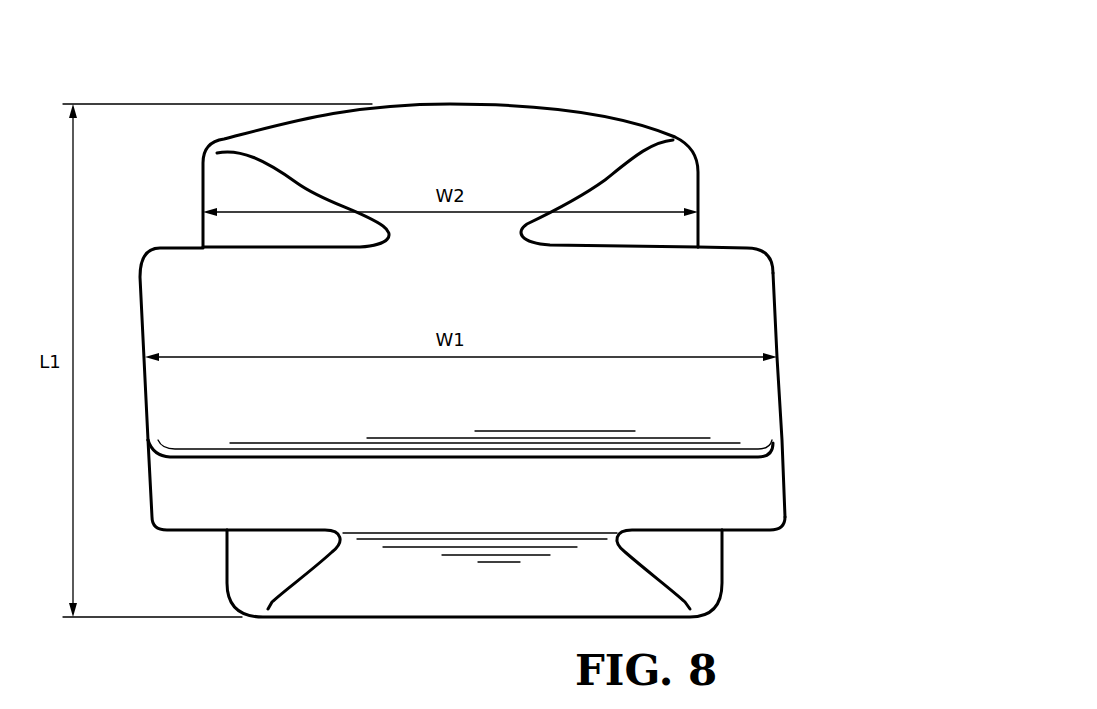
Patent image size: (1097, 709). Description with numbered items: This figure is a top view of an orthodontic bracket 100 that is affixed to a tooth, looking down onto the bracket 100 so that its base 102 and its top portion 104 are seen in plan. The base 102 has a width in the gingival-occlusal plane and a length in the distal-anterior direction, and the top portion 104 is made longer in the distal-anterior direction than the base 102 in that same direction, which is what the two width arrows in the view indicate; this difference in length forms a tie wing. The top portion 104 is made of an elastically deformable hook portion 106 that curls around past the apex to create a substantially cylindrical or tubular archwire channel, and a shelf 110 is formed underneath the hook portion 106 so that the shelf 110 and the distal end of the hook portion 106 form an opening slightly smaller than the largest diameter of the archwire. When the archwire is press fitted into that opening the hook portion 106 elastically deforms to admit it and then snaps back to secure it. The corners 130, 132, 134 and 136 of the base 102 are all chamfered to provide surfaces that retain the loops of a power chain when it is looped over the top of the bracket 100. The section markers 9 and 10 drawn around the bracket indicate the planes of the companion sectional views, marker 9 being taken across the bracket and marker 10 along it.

The bracket 100 is at (674, 100).
The base 102 is at (718, 600).
The top portion 104 is at (783, 428).
The hook portion 106 is at (748, 300).
The shelf 110 is at (763, 492).
The corner 130 is at (675, 180).
The corner 132 is at (225, 182).
The corner 134 is at (245, 565).
The corner 136 is at (703, 557).
The section line 9- 9 is at (105, 342).
The section line 10- 10 is at (474, 88).